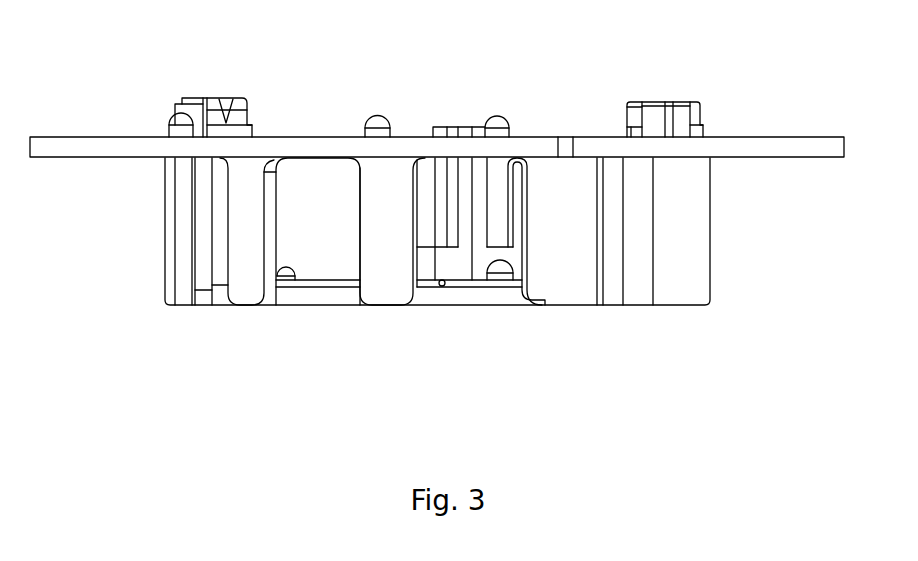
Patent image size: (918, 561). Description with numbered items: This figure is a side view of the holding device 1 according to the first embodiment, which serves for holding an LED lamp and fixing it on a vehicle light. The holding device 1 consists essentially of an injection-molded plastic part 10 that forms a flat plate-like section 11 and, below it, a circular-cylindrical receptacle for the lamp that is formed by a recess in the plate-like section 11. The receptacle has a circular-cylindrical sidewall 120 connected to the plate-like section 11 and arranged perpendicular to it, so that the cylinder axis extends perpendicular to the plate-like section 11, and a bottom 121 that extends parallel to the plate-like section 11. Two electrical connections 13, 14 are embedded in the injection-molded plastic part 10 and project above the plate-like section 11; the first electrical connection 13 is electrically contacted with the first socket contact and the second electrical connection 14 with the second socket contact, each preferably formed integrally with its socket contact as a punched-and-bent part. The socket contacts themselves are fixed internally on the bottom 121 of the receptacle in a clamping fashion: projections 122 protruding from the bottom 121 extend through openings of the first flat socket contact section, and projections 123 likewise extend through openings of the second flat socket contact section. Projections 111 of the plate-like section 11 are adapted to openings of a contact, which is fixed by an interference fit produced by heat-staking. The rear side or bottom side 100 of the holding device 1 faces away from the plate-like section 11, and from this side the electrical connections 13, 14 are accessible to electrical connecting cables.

The holding device 1 is at (94, 132).
The injection-molded plastic part 10 is at (680, 290).
The rear side or bottom side 100 is at (578, 305).
The plate-like section 11 is at (802, 137).
The projections 111 is at (377, 115).
The first electrical connection 13 is at (217, 100).
The second electrical connection 14 is at (666, 137).
The circular-cylindrical sidewall 120 is at (387, 291).
The bottom 121 is at (446, 295).
The projections 122 is at (286, 276).
The projections 123 is at (500, 273).